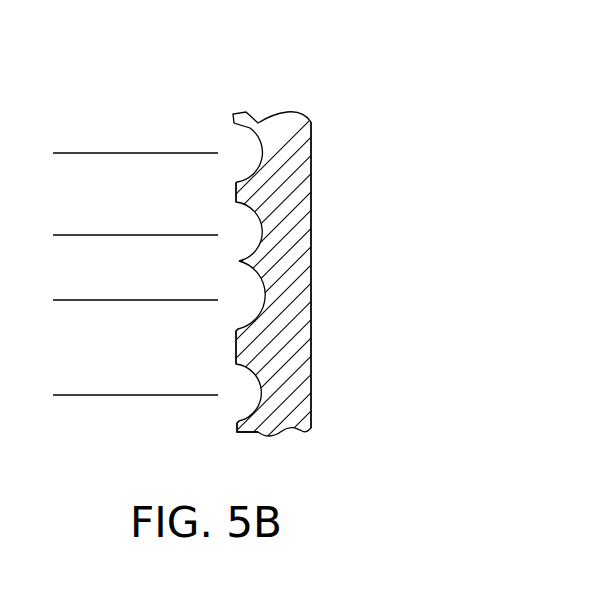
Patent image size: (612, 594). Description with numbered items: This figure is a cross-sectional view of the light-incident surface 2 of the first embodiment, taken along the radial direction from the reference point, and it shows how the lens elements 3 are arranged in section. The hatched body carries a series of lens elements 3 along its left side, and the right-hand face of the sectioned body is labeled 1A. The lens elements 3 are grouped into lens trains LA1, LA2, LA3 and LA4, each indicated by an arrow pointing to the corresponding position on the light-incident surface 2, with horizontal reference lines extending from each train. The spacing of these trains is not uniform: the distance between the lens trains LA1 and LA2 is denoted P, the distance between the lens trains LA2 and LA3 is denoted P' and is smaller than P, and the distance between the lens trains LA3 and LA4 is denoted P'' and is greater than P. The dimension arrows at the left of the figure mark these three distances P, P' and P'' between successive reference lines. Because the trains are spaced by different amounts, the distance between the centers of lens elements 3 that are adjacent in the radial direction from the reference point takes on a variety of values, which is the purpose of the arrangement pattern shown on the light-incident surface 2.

The light-incident surface 2 is at (199, 72).
The outer peripheral surface 1A is at (311, 175).
The lens element 3 is at (236, 186).
The lens train LA1 is at (215, 140).
The lens train LA2 is at (215, 224).
The lens train LA3 is at (215, 290).
The lens train LA4 is at (215, 378).
The distance between lens trains LA1 and LA2 P is at (86, 194).
The distance between lens trains LA2 and LA3 P' is at (89, 267).
The distance between lens trains LA3 and LA4 P'' is at (92, 347).